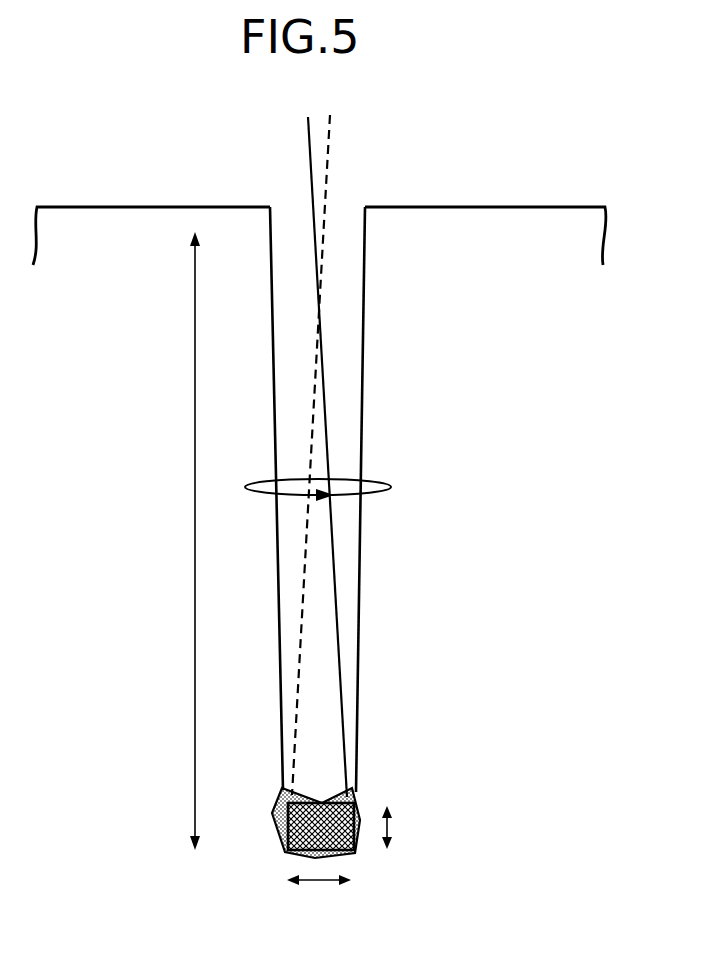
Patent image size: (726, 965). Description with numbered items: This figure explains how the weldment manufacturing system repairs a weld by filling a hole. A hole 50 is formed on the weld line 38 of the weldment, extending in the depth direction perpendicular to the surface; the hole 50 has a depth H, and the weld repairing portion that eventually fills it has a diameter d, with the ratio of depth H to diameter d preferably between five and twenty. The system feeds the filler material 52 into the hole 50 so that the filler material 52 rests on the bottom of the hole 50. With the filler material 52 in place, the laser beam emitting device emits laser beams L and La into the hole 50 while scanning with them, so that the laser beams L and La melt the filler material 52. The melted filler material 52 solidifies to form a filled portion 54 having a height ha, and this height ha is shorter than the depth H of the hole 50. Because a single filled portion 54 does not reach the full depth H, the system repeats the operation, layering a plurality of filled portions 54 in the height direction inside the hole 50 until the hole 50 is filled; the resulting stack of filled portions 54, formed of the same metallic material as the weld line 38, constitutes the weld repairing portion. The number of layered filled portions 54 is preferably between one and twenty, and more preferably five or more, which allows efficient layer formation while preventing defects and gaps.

The weld line 38 is at (125, 218).
The hole 50 is at (272, 225).
The filler material 52 is at (287, 838).
The filled portion 54 is at (321, 802).
The laser beam L is at (306, 137).
The laser beam La is at (333, 140).
The depth H is at (183, 541).
The height ha is at (405, 827).
The diameter d is at (319, 893).